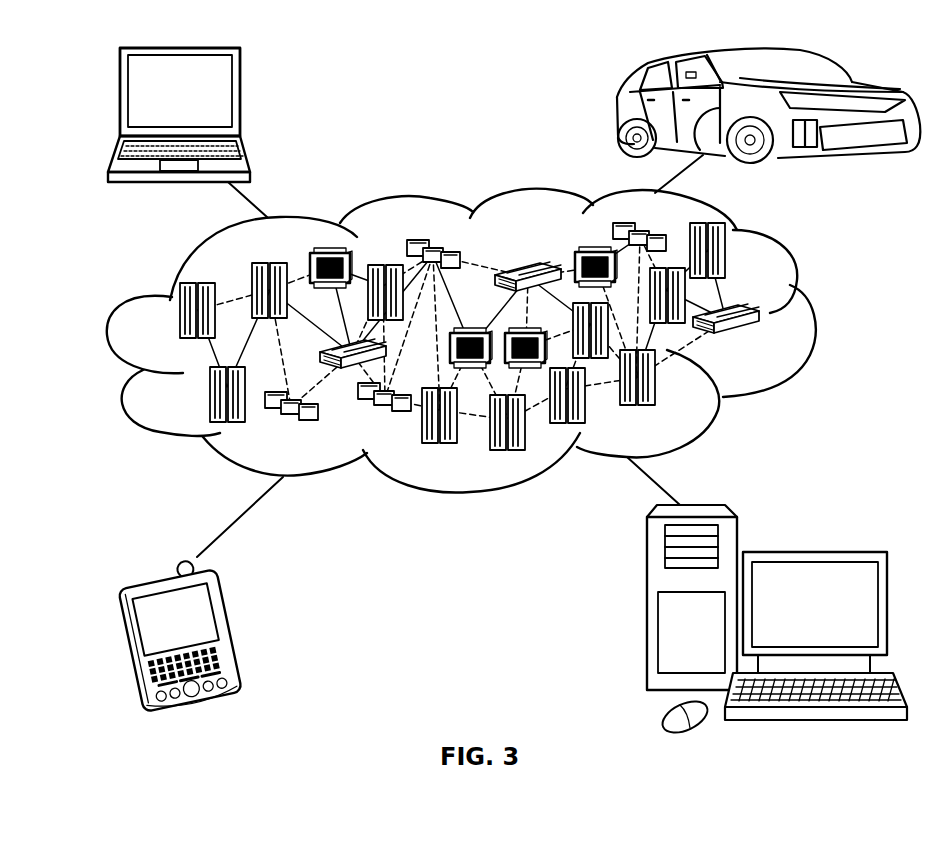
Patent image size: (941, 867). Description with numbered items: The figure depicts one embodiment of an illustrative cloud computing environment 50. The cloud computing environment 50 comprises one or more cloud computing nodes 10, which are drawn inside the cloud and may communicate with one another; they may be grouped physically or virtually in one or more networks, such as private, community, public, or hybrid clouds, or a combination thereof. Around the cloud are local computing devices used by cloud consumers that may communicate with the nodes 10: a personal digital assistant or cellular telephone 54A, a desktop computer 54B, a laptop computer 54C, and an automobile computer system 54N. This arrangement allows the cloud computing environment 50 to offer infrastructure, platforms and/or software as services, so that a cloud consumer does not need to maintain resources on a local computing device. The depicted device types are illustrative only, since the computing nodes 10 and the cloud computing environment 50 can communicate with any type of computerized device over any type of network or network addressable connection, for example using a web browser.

The cloud computing nodes 10 is at (770, 343).
The cloud computing environment 50 is at (817, 317).
The personal digital assistant (PDA) or cellular telephone 54A is at (233, 628).
The desktop computer 54B is at (812, 552).
The laptop computer 54C is at (240, 98).
The automobile computer system 54N is at (622, 108).